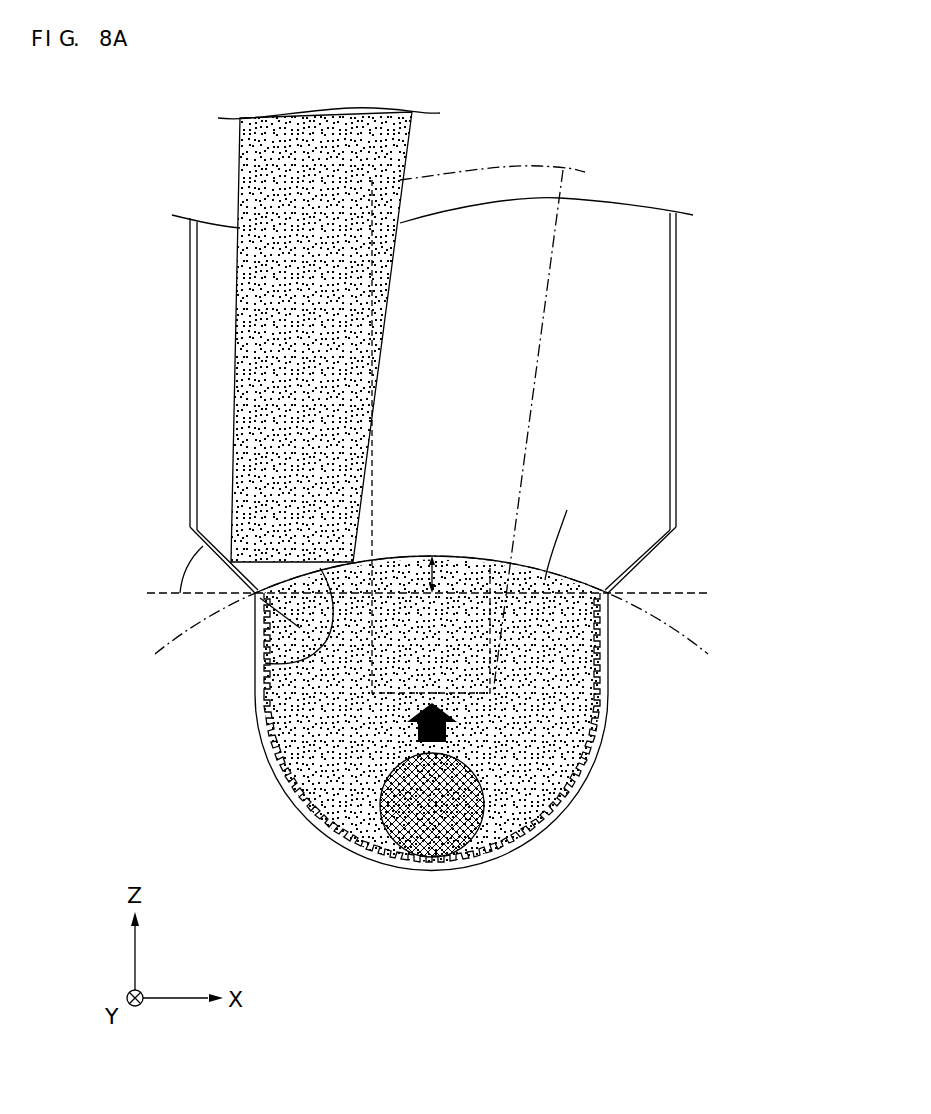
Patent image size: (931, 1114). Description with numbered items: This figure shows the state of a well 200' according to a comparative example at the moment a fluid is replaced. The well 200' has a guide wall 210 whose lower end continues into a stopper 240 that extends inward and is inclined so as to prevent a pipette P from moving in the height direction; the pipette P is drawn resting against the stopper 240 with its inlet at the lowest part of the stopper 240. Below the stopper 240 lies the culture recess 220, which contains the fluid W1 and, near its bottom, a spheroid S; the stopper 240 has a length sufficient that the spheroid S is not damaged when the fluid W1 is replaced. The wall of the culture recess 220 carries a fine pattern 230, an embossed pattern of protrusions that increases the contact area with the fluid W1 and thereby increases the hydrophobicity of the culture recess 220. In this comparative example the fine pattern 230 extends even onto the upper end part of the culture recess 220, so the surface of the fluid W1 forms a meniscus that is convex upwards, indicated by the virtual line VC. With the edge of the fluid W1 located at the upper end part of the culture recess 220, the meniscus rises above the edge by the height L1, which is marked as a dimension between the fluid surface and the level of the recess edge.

The well 200' is at (736, 79).
The pipette P is at (250, 170).
The guide wall 210 is at (676, 272).
The stopper 240 is at (648, 562).
The culture recess 220 is at (592, 767).
The fine pattern 230 is at (603, 726).
The spheroid S is at (431, 840).
The virtual line VC is at (678, 626).
The height of the meniscus L1 is at (440, 561).
The fluid W1 is at (567, 533).